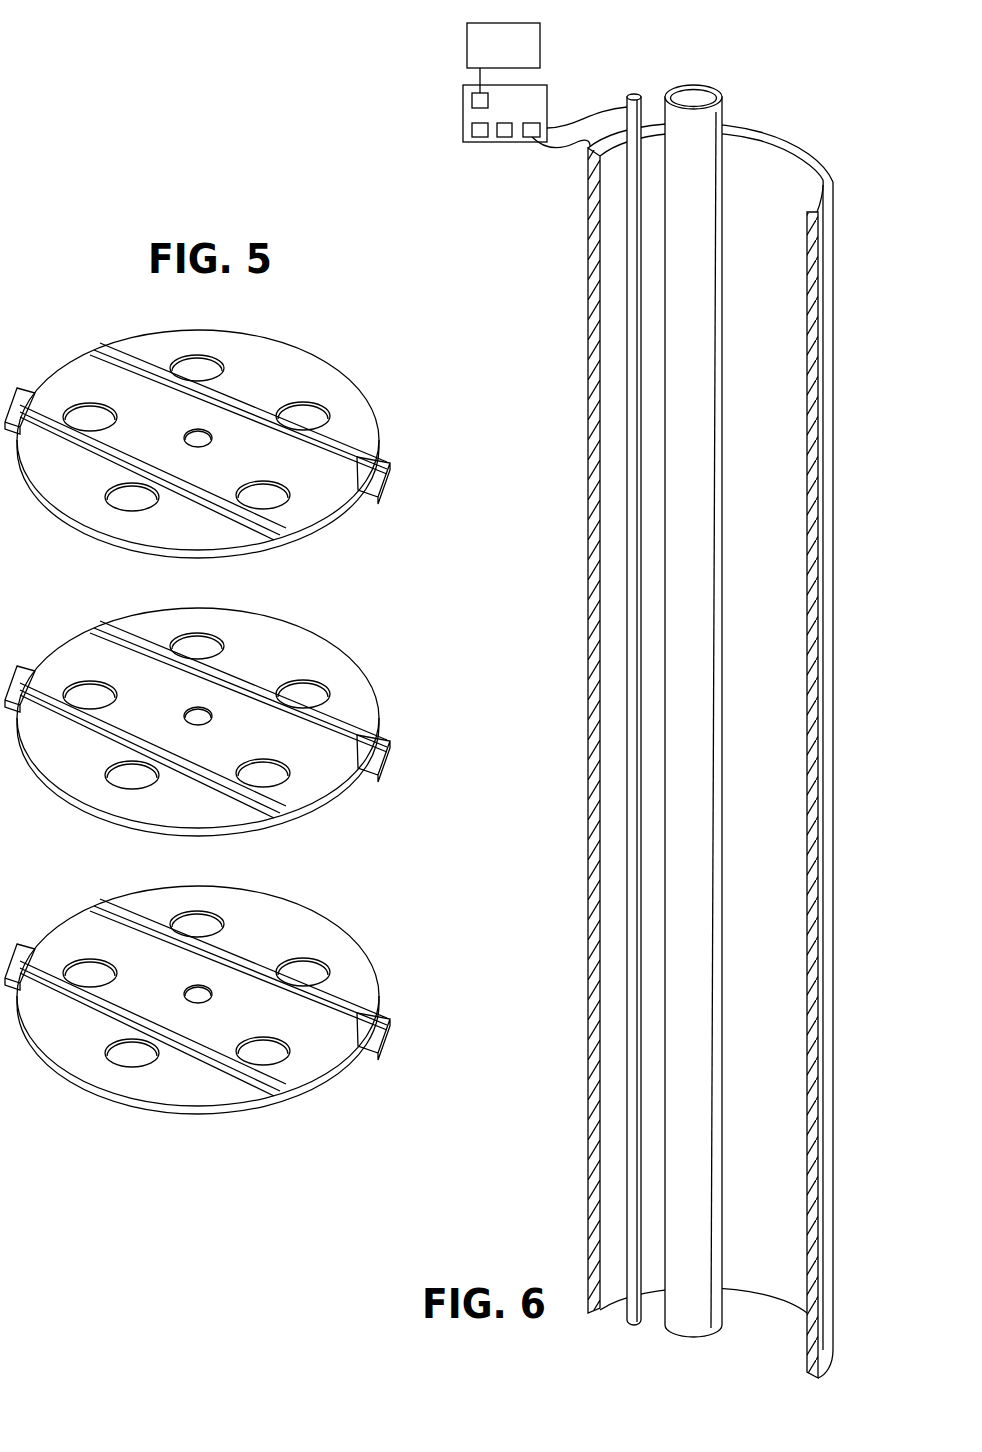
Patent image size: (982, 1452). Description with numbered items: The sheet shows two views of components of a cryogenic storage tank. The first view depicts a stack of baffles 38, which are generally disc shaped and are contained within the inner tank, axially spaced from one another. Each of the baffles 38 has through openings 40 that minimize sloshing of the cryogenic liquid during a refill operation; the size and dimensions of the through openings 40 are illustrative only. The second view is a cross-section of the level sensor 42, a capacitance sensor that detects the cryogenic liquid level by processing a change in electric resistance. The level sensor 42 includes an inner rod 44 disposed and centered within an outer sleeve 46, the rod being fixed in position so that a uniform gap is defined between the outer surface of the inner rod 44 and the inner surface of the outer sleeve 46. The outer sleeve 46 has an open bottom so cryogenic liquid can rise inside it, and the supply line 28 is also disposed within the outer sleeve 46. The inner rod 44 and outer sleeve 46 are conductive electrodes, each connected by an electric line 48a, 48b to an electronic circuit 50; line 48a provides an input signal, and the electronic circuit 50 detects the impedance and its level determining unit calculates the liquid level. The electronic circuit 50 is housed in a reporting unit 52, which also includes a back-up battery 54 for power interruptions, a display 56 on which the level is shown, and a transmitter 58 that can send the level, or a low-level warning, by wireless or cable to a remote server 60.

In FIG. 6, the supply line 28 is at (714, 88).
In FIG. 5, the baffles 38 is at (396, 1114).
In FIG. 5, the through openings 40 is at (318, 645).
In FIG. 6, the level sensor 42 is at (866, 406).
In FIG. 6, the inner rod 44 is at (641, 96).
In FIG. 6, the outer sleeve 46 is at (833, 862).
In FIG. 6, the electric line 48a is at (562, 150).
In FIG. 6, the electric line 48b is at (590, 118).
In FIG. 6, the electronic circuit 50 is at (529, 137).
In FIG. 6, the reporting unit 52 is at (508, 114).
In FIG. 6, the back-up battery 54 is at (503, 137).
In FIG. 6, the display 56 is at (470, 130).
In FIG. 6, the transmitter 58 is at (470, 100).
In FIG. 6, the remote server 60 is at (513, 56).